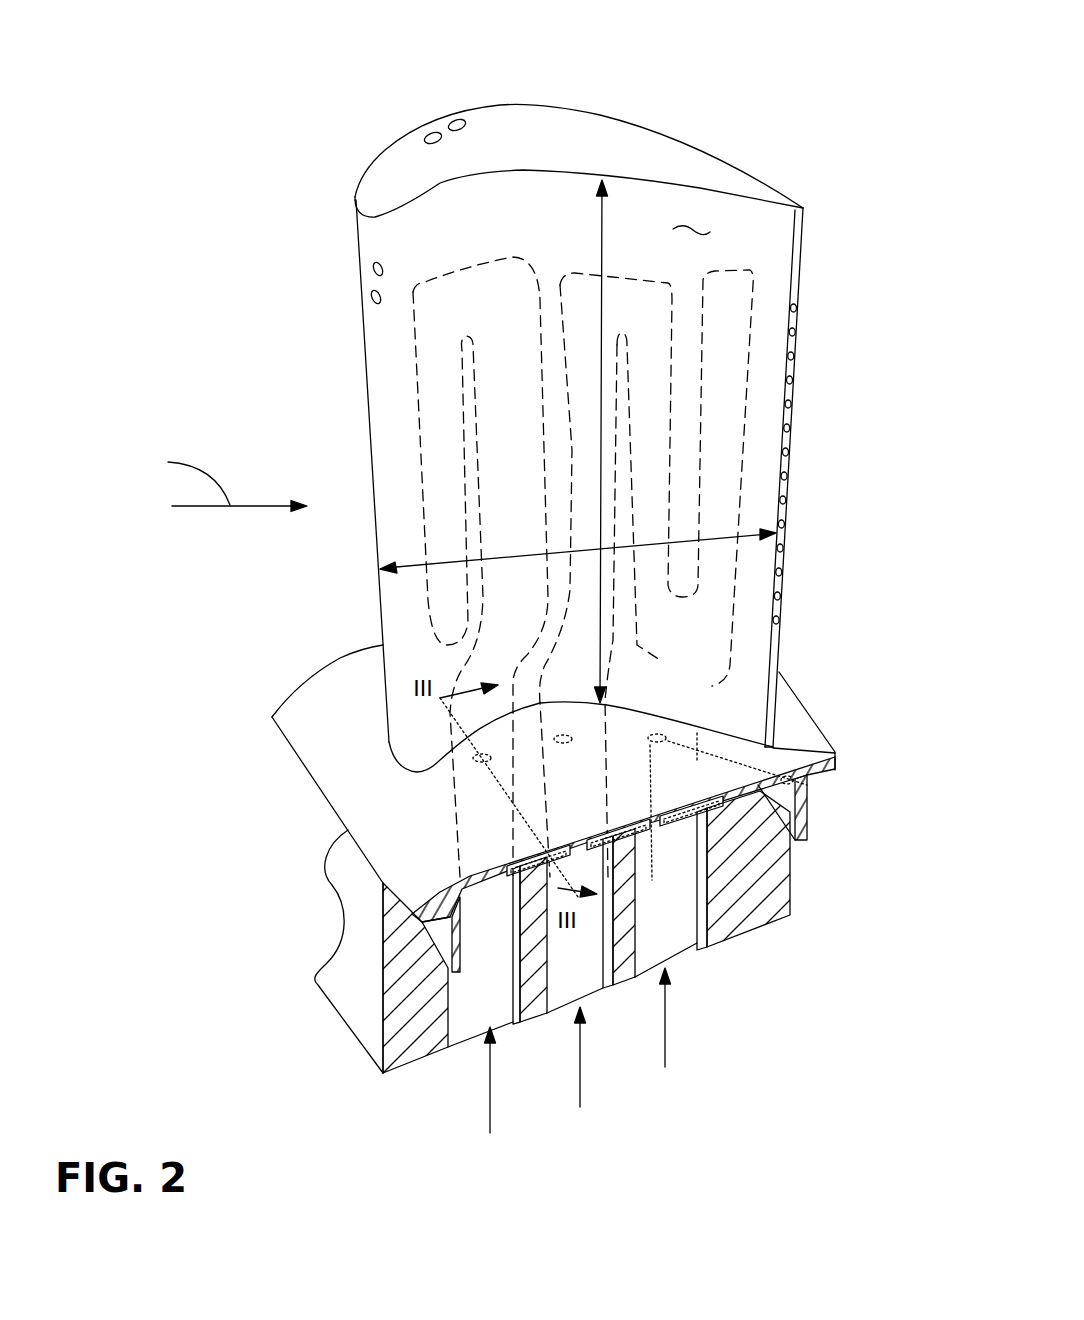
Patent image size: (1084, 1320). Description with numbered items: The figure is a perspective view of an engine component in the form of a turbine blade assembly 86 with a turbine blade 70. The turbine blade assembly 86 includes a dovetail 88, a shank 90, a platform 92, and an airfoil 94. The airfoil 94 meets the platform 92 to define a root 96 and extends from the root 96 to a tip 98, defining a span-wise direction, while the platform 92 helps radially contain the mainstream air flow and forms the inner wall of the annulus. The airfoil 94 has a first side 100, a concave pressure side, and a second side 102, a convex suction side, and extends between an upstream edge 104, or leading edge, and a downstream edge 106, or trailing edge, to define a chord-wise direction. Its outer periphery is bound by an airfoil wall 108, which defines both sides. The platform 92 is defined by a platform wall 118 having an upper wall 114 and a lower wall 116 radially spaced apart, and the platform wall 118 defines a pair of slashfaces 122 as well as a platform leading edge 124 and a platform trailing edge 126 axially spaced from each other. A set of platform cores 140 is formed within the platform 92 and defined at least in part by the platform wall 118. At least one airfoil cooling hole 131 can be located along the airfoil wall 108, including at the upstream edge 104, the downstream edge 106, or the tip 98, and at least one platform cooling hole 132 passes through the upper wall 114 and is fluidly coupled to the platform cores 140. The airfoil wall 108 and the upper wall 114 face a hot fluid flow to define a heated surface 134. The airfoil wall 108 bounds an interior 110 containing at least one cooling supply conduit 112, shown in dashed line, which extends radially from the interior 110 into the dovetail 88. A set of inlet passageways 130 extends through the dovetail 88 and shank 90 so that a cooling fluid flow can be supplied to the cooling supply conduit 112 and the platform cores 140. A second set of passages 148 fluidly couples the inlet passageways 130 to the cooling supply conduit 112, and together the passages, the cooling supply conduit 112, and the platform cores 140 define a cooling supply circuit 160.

The turbine blade 70 is at (395, 172).
The turbine blade assembly 86 is at (145, 188).
The dovetail 88 is at (348, 978).
The shank 90 is at (350, 849).
The platform 92 is at (337, 745).
The airfoil 94 is at (345, 358).
The root 96 is at (750, 737).
The tip 98 is at (520, 173).
The first side 100 is at (762, 285).
The second side 102 is at (613, 122).
The upstream edge 104 is at (357, 223).
The downstream edge 106 is at (807, 237).
The airfoil wall 108 is at (693, 227).
The interior 110 is at (527, 408).
The cooling supply conduit 112 is at (653, 380).
The upper wall 114 is at (337, 697).
The lower wall 116 is at (807, 838).
The platform wall 118 is at (432, 880).
The slashfaces 122 is at (333, 657).
The platform leading edge 124 is at (335, 788).
The platform trailing edge 126 is at (828, 723).
The inlet passageways 130 is at (567, 973).
The airfoil cooling hole 131 is at (372, 268).
The platform cooling hole 132 is at (457, 120).
The heated surface 134 is at (833, 743).
The platform cores 140 is at (643, 823).
The second set of passages 148 is at (705, 683).
The cooling supply circuit 160 is at (440, 535).